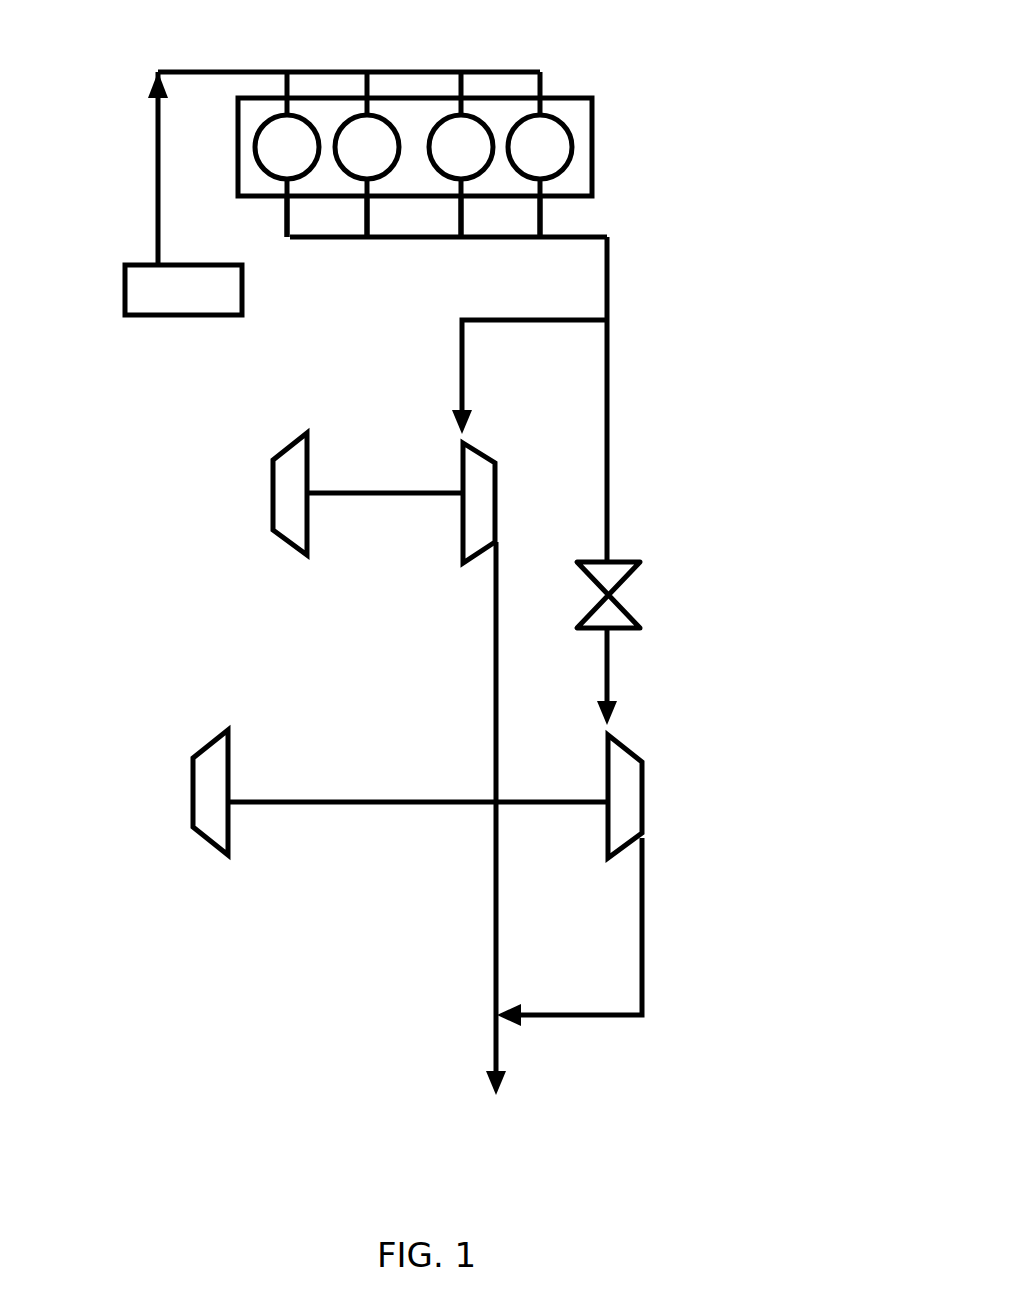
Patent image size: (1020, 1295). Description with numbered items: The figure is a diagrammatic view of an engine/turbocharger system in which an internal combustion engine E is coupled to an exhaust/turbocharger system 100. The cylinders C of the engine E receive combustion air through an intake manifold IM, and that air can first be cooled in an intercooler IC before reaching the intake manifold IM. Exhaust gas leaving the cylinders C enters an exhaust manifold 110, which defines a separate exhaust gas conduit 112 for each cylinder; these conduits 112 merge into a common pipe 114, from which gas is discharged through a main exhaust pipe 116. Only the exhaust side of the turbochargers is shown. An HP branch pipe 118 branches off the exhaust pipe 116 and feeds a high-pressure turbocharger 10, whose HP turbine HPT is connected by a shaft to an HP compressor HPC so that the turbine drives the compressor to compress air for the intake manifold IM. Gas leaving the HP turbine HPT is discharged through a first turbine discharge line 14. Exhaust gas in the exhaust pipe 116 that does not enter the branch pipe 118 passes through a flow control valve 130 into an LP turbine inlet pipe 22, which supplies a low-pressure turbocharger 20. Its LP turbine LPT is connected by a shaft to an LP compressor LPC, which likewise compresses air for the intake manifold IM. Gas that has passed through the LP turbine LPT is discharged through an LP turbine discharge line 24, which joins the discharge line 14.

The intake manifold IM is at (245, 70).
The internal combustion engine E is at (604, 105).
The cylinders C is at (452, 138).
The exhaust/turbocharger system 100 is at (663, 202).
The exhaust gas conduit 112 is at (363, 208).
The exhaust manifold 110 is at (354, 248).
The common pipe 114 is at (583, 232).
The HP branch pipe 118 is at (458, 338).
The exhaust pipe 116 is at (612, 390).
The intercooler IC is at (137, 292).
The high-pressure turbocharger 10 is at (333, 487).
The HP compressor HPC is at (285, 510).
The HP turbine HPT is at (475, 517).
The flow control valve 130 is at (625, 560).
The LP turbine inlet pipe 22 is at (612, 673).
The first turbine discharge line 14 is at (493, 690).
The low-pressure turbocharger 20 is at (377, 782).
The LP compressor LPC is at (210, 815).
The LP turbine LPT is at (625, 815).
The LP turbine discharge line 24 is at (645, 897).